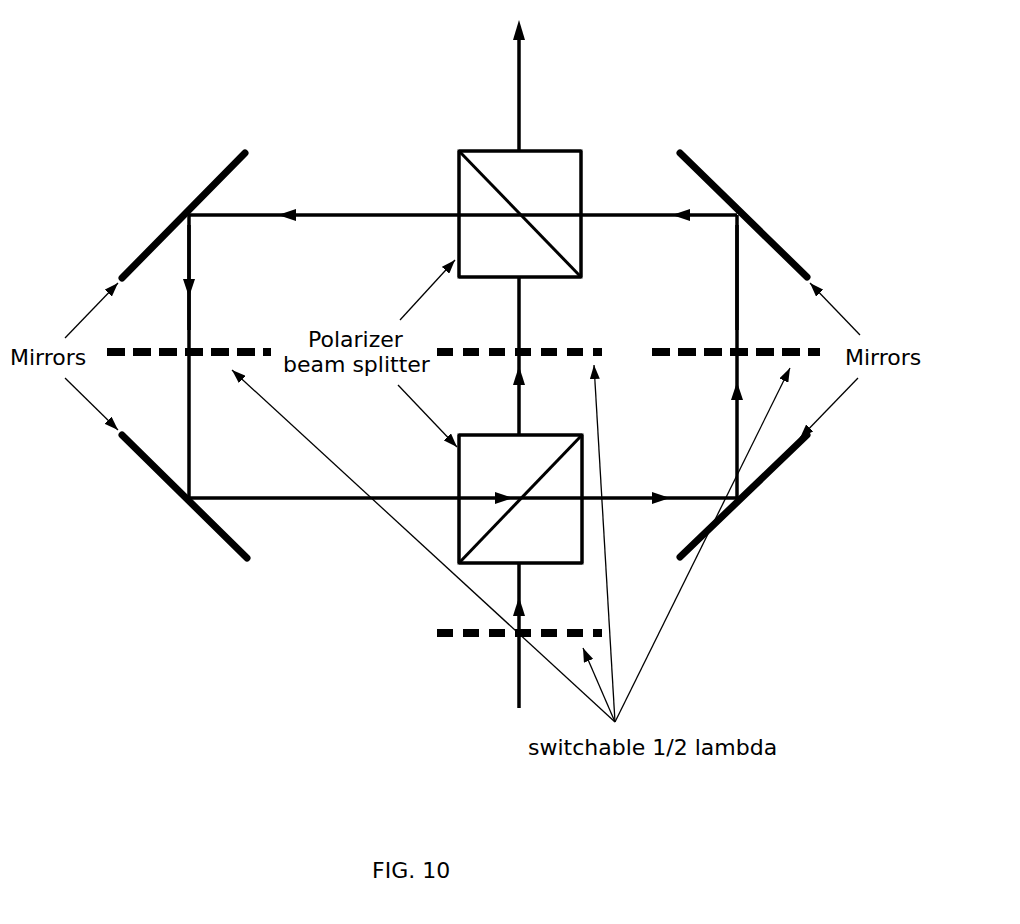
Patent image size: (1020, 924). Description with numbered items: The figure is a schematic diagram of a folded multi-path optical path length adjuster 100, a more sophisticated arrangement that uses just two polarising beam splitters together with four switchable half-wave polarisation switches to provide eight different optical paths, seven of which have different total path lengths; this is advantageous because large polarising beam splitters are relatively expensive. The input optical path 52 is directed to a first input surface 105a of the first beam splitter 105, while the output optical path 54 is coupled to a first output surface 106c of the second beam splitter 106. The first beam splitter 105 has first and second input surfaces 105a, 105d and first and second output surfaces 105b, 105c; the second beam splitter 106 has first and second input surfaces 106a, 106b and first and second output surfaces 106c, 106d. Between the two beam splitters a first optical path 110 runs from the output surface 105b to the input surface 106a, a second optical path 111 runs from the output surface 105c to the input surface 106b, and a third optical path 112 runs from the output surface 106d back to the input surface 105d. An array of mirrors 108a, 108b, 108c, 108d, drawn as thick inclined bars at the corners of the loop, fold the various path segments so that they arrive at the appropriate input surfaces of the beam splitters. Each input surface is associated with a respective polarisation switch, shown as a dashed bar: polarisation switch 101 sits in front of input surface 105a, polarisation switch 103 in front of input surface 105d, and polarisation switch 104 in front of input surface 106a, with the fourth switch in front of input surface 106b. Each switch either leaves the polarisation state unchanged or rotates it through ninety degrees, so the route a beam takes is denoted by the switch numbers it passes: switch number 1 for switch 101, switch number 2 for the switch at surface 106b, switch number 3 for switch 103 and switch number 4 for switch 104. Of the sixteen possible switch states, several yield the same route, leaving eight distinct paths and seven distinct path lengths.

The path length adjuster 100 is at (108, 102).
The output optical path 54 is at (517, 65).
The input optical path 52 is at (517, 694).
The polarisation switch 101 is at (436, 633).
The polarisation switch 103 is at (165, 358).
The polarisation switch 104 is at (472, 358).
The first beam splitter 105 is at (458, 540).
The first input surface 105a is at (556, 564).
The first output surface 105b is at (556, 434).
The second output surface 105c is at (584, 462).
The second input surface 105d is at (458, 463).
The second beam splitter 106 is at (458, 237).
The first input surface 106a is at (477, 278).
The second input surface 106b is at (584, 246).
The first output surface 106c is at (553, 150).
The second output surface 106d is at (458, 183).
The mirror 108a is at (775, 470).
The mirror 108b is at (770, 243).
The mirror 108c is at (160, 237).
The mirror 108d is at (158, 470).
The first optical path 110 is at (523, 303).
The second optical path 111 is at (740, 313).
The third optical path 112 is at (192, 306).
The switch number 1 is at (505, 667).
The switch number 2 is at (712, 392).
The switch number 3 is at (215, 384).
The switch number 4 is at (504, 375).